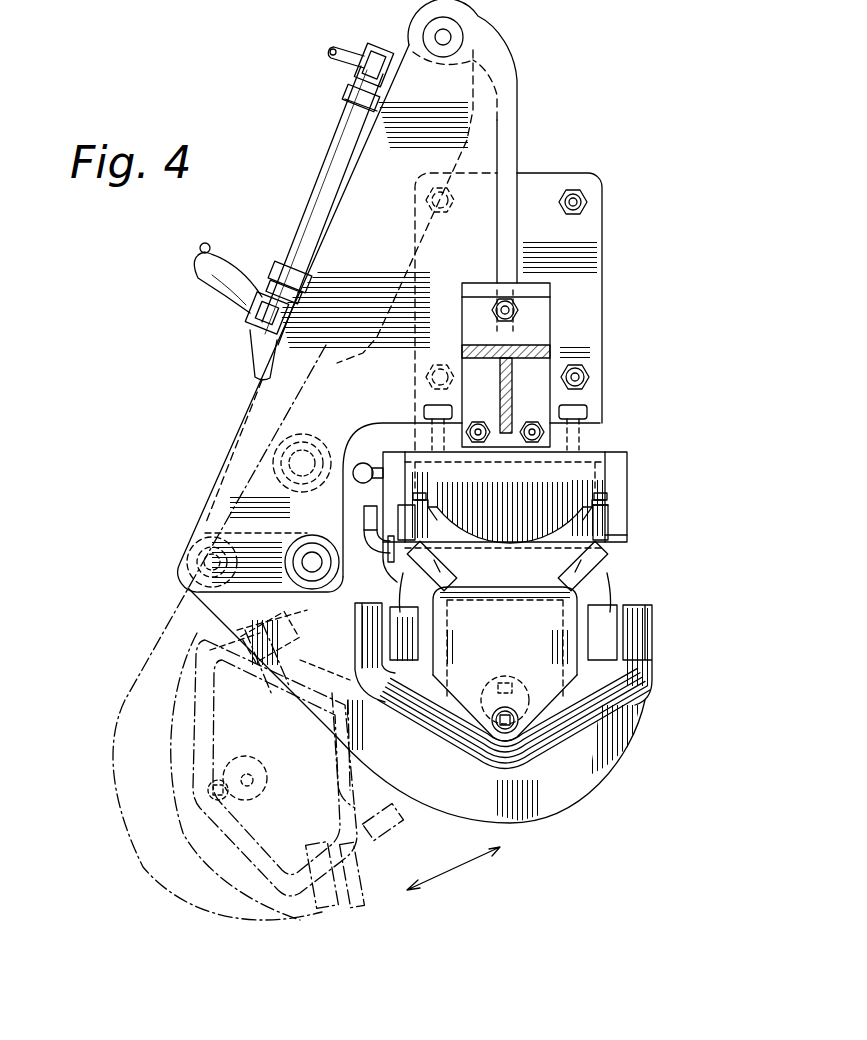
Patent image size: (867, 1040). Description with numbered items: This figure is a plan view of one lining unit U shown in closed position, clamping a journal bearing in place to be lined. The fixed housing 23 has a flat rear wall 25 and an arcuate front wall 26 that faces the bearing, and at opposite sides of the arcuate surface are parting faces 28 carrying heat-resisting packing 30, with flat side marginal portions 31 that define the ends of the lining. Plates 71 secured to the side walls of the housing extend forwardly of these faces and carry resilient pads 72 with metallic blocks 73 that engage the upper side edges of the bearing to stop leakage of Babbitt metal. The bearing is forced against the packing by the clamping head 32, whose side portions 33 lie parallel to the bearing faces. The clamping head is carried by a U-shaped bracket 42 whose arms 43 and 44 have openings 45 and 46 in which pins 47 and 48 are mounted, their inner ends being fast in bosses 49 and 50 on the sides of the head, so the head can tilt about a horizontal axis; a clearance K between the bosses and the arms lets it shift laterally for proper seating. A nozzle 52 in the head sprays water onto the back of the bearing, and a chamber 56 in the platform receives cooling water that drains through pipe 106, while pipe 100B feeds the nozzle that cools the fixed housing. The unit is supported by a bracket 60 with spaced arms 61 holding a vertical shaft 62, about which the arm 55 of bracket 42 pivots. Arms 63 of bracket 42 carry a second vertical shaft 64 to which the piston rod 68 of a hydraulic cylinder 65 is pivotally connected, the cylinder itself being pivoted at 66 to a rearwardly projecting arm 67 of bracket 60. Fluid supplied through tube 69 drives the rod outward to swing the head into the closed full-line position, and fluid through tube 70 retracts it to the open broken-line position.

The housing 23 is at (482, 542).
The flat rear wall 25 is at (510, 512).
The arcuate front wall 26 is at (503, 545).
The parting faces 28 is at (609, 514).
The packing 30 is at (600, 497).
The flat side marginal portions 31 is at (440, 522).
The clamping head 32 is at (560, 705).
The side portions 33 is at (612, 583).
The bracket 42 is at (567, 807).
The arm 43 is at (642, 615).
The arm 44 is at (353, 613).
The opening 45 is at (655, 670).
The opening 46 is at (345, 685).
The pin 47 is at (653, 647).
The pin 48 is at (390, 640).
The boss 49 is at (585, 665).
The boss 50 is at (405, 690).
The nozzle 52 is at (503, 668).
The arm 55 is at (398, 582).
The chamber 56 is at (528, 555).
The bracket 60 is at (405, 432).
The arms 61 is at (328, 498).
The vertical shaft 62 is at (305, 570).
The arms 63 is at (237, 595).
The vertical shaft 64 is at (200, 565).
The hydraulic cylinder 65 is at (333, 165).
The pivotal connection 66 is at (450, 36).
The arm 67 is at (510, 143).
The piston rod 68 is at (250, 435).
The tube 69 is at (335, 63).
The tube 70 is at (200, 275).
The plates 71 is at (630, 470).
The pad 72 is at (612, 540).
The metallic blocks 73 is at (608, 542).
The pipe 100B is at (365, 462).
The pipe 106 is at (372, 514).
The clearance K is at (632, 705).
The unit U is at (642, 532).